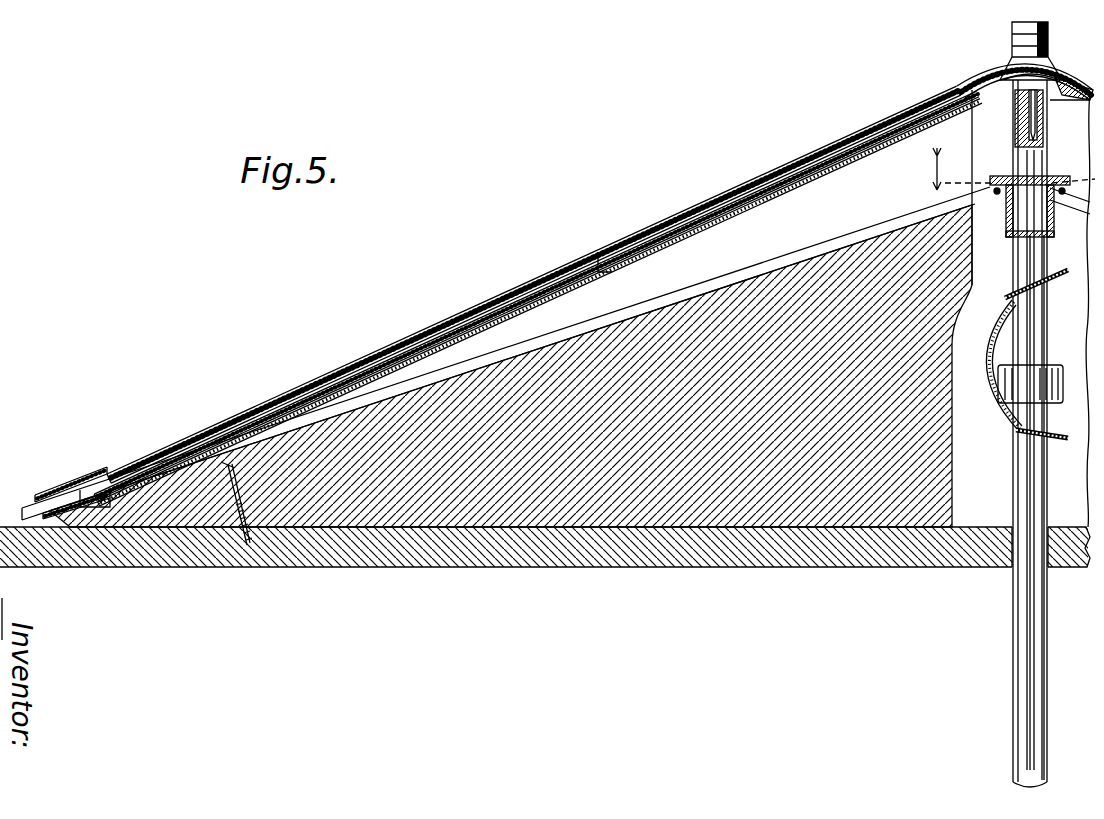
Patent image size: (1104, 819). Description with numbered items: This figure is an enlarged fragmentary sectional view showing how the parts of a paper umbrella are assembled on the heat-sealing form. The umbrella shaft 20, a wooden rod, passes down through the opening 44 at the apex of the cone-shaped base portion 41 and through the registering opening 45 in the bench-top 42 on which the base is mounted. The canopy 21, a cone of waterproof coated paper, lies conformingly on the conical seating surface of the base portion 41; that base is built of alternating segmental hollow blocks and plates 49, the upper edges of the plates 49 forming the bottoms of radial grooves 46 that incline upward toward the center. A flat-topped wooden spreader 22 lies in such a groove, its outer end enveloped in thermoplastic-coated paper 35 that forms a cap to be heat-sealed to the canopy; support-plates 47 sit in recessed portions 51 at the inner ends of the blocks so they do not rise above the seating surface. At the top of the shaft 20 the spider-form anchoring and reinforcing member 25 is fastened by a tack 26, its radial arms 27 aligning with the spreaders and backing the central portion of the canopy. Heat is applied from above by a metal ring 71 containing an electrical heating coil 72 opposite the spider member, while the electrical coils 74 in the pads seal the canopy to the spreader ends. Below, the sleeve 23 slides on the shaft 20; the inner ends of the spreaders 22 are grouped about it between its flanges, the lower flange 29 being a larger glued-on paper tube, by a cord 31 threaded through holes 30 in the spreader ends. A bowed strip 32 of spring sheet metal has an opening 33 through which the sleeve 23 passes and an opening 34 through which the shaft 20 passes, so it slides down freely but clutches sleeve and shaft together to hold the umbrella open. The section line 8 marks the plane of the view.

The section line 8 is at (1004, 171).
The shaft portion 20 is at (1048, 170).
The canopy or cover section 21 is at (539, 331).
The spreaders 22 is at (180, 468).
The sleeve 23 is at (1026, 268).
The anchoring and reinforcing member 25 is at (1012, 64).
The tack 26 is at (1030, 138).
The radial arms 27 is at (1015, 120).
The flange 29 is at (1052, 364).
The holes 30 is at (1030, 211).
The cord 31 is at (993, 185).
The strip 32 is at (980, 362).
The opening 33 is at (1012, 296).
The opening 34 is at (1022, 434).
The coated paper 35 is at (72, 500).
The base portion 41 is at (395, 497).
The bench-top 42 is at (450, 553).
The opening 44 is at (953, 470).
The opening 45 is at (1010, 548).
The grooves 46 is at (539, 301).
The support-plates 47 is at (536, 295).
The plates 49 is at (460, 322).
The recessed portions 51 is at (600, 252).
The metal ring 71 is at (534, 284).
The electrical heating coil 72 is at (979, 82).
The electrical coils 74 is at (58, 492).